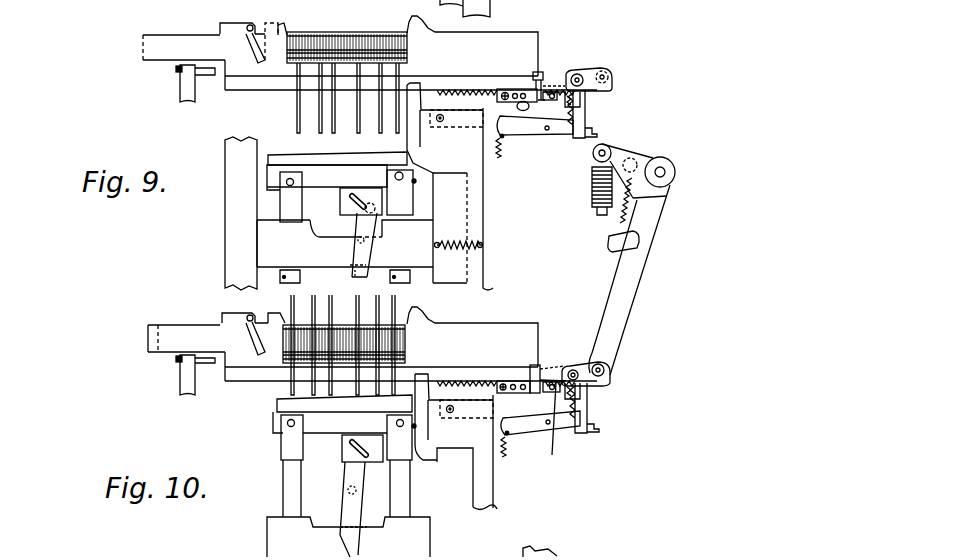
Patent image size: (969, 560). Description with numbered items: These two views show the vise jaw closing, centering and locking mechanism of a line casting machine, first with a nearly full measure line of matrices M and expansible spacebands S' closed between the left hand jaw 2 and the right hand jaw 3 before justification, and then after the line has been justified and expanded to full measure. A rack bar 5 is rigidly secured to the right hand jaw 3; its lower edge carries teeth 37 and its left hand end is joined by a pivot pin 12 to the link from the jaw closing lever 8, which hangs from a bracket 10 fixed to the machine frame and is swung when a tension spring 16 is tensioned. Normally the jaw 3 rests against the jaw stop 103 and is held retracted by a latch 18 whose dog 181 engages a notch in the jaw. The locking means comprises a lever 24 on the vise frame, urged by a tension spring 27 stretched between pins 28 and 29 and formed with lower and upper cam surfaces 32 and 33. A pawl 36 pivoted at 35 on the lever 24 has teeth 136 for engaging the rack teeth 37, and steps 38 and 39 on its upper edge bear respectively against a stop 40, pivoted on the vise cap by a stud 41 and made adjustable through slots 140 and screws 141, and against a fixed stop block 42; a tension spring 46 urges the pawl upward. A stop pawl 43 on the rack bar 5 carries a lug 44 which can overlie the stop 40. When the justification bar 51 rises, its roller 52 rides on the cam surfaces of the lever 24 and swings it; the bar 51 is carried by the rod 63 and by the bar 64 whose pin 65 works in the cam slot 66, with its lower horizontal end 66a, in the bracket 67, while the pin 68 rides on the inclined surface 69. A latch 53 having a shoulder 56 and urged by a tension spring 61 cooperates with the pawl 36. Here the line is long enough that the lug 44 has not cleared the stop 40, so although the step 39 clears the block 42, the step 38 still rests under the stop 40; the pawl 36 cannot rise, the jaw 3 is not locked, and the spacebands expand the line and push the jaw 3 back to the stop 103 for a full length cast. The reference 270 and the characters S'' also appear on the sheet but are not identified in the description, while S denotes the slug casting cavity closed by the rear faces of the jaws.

In FIG. 10, the left hand jaw 2 is at (489, 331).
In FIG. 9, the right hand jaw 3 is at (179, 42).
In FIG. 10, the right hand jaw 3 is at (181, 333).
In FIG. 9, the rack bar 5 is at (438, 86).
In FIG. 10, the rack bar 5 is at (436, 375).
In FIG. 9, the lever 8 is at (637, 281).
In FIG. 9, the bracket 10 is at (319, 4).
In FIG. 10, the pivot pin 12 is at (159, 554).
In FIG. 9, the tension spring 16 is at (592, 190).
In FIG. 9, the latch 18 is at (238, 23).
In FIG. 10, the latch 18 is at (245, 318).
In FIG. 9, the lever 24 is at (484, 218).
In FIG. 10, the lever 24 is at (494, 491).
In FIG. 9, the tension spring 27 is at (484, 234).
In FIG. 9, the pin 28 is at (484, 260).
In FIG. 9, the pin 29 is at (435, 247).
In FIG. 9, the lower inclined cam surface 32 is at (418, 164).
In FIG. 10, the lower inclined cam surface 32 is at (424, 462).
In FIG. 9, the upper inclined cam surface 33 is at (398, 139).
In FIG. 10, the upper inclined cam surface 33 is at (412, 398).
In FIG. 9, the pivot 35 is at (450, 120).
In FIG. 10, the pivot 35 is at (460, 409).
In FIG. 9, the pawl 36 is at (498, 120).
In FIG. 10, the pawl 36 is at (590, 409).
In FIG. 9, the teeth 37 is at (465, 91).
In FIG. 10, the step 38 is at (550, 428).
In FIG. 10, the step 39 is at (582, 393).
In FIG. 9, the stop 40 is at (535, 72).
In FIG. 9, the stud 41 is at (503, 88).
In FIG. 10, the stud 41 is at (503, 380).
In FIG. 9, the stop block 42 is at (553, 88).
In FIG. 10, the stop block 42 is at (553, 380).
In FIG. 9, the stop pawl 43 is at (544, 85).
In FIG. 10, the stop pawl 43 is at (546, 368).
In FIG. 10, the lug 44 is at (533, 364).
In FIG. 9, the tension spring 46 is at (586, 112).
In FIG. 10, the tension spring 46 is at (576, 418).
In FIG. 9, the justification bar 51 is at (293, 160).
In FIG. 10, the justification bar 51 is at (277, 404).
In FIG. 9, the roller 52 is at (450, 228).
In FIG. 10, the roller 52 is at (452, 465).
In FIG. 9, the latch 53 is at (545, 132).
In FIG. 10, the latch 53 is at (548, 426).
In FIG. 9, the shoulder 56 is at (598, 130).
In FIG. 10, the shoulder 56 is at (600, 428).
In FIG. 9, the tension spring 61 is at (497, 157).
In FIG. 10, the tension spring 61 is at (503, 455).
In FIG. 9, the rod 63 is at (279, 22).
In FIG. 9, the bar 64 is at (355, 277).
In FIG. 10, the bar 64 is at (348, 490).
In FIG. 9, the pin 65 is at (376, 208).
In FIG. 9, the cam slot 66 is at (358, 194).
In FIG. 10, the lower horizontal end of cam slot 66a is at (361, 423).
In FIG. 9, the bracket 67 is at (340, 203).
In FIG. 10, the bracket 67 is at (342, 458).
In FIG. 9, the pin 68 is at (356, 260).
In FIG. 10, the pin 68 is at (362, 491).
In FIG. 9, the inclined surface 69 is at (353, 240).
In FIG. 10, the inclined surface 69 is at (360, 555).
In FIG. 9, the right hand vise jaw stop 103 is at (196, 82).
In FIG. 10, the right hand vise jaw stop 103 is at (196, 375).
In FIG. 9, the teeth 136 is at (585, 99).
In FIG. 9, the slots 140 is at (536, 111).
In FIG. 10, the screws 141 is at (524, 393).
In FIG. 9, the dog 181 is at (220, 28).
In FIG. 9, the guide 270 is at (373, 17).
In FIG. 9, the matrices M is at (330, 35).
In FIG. 10, the matrices M is at (322, 322).
In FIG. 9, the slug casting cavity S is at (345, 73).
In FIG. 9, the spacebands S' is at (291, 113).
In FIG. 10, the sinkers S'' is at (356, 342).